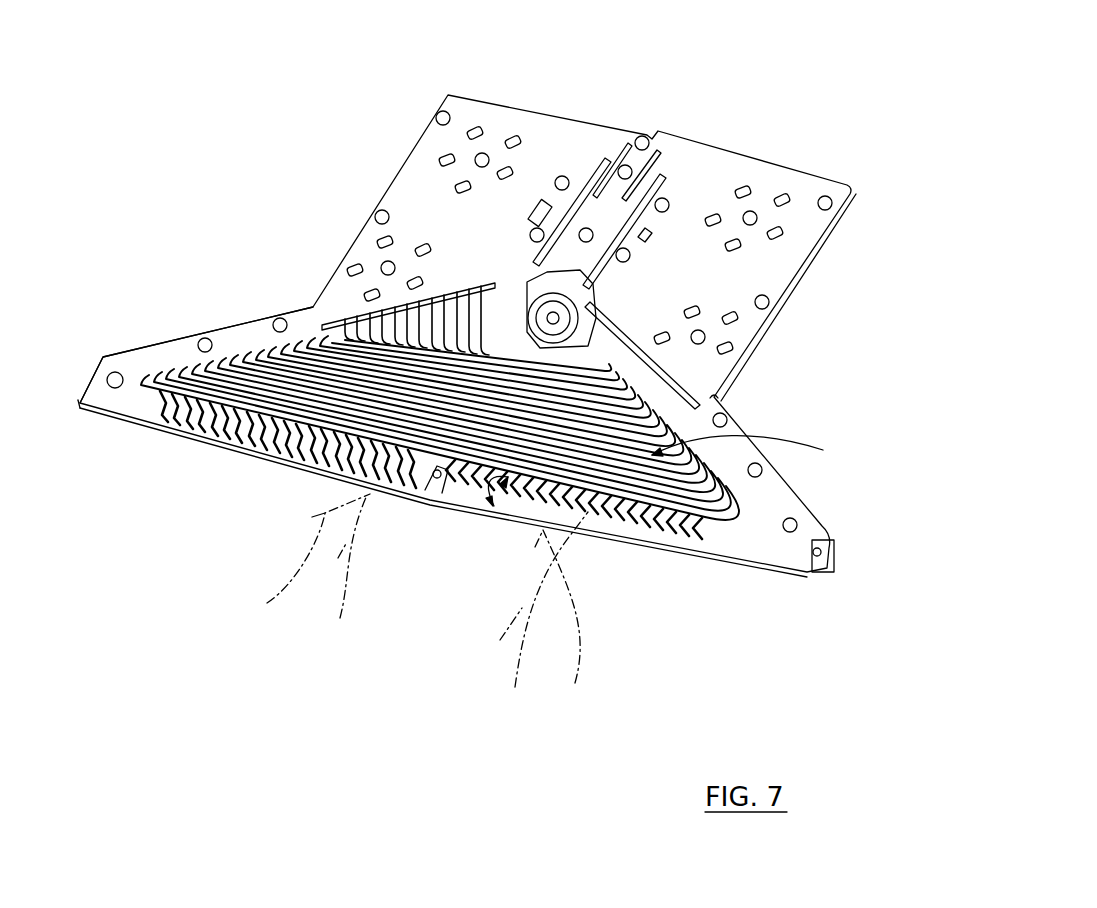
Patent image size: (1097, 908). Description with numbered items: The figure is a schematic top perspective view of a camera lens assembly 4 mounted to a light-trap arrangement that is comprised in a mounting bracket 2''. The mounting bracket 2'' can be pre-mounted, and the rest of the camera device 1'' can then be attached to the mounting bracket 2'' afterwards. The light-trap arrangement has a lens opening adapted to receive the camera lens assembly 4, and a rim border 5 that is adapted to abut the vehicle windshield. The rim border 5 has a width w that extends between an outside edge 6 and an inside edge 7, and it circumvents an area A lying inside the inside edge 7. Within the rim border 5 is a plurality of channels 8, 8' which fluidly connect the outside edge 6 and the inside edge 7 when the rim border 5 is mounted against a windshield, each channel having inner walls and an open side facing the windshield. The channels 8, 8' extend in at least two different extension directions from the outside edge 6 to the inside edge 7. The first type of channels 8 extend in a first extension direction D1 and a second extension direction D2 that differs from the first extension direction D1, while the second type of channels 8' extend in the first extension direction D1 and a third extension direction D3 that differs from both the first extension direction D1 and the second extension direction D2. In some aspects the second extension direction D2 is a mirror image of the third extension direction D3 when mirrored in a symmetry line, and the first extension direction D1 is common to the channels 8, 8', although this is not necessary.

The camera device 1'' is at (468, 295).
The mounting bracket 2'' is at (521, 222).
The camera lens assembly 4 is at (540, 313).
The rim border 5 is at (113, 402).
The outside edge 6 is at (202, 440).
The inside edge 7 is at (230, 420).
The channels 8 is at (329, 492).
The channels 8' is at (574, 564).
The width w is at (465, 490).
The area A is at (752, 455).
The first extension direction D1 is at (452, 607).
The second extension direction D2 is at (299, 561).
The third extension direction D3 is at (568, 624).